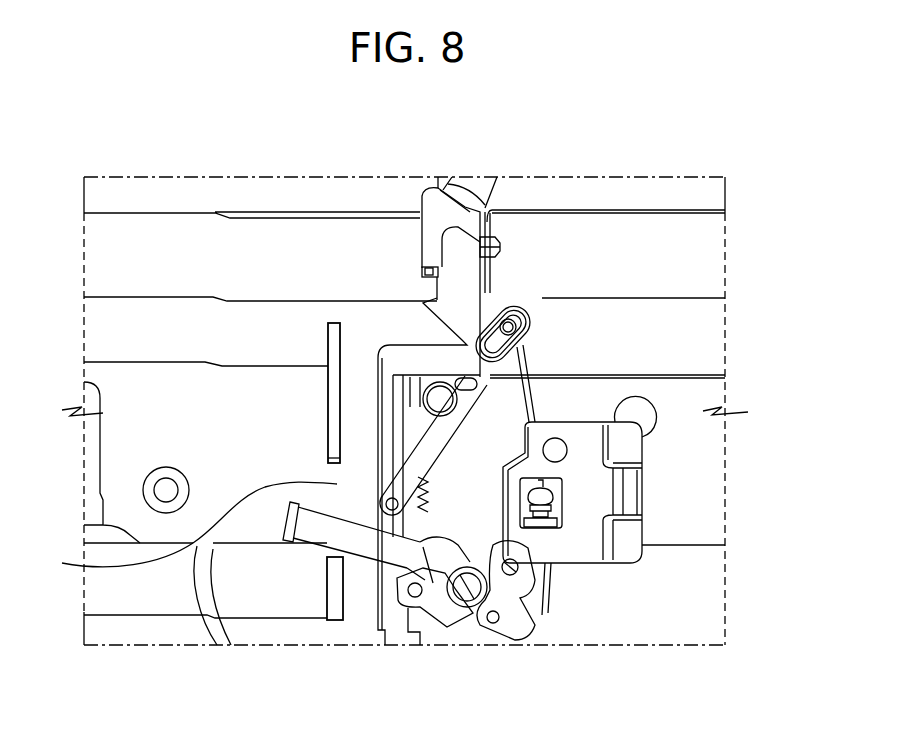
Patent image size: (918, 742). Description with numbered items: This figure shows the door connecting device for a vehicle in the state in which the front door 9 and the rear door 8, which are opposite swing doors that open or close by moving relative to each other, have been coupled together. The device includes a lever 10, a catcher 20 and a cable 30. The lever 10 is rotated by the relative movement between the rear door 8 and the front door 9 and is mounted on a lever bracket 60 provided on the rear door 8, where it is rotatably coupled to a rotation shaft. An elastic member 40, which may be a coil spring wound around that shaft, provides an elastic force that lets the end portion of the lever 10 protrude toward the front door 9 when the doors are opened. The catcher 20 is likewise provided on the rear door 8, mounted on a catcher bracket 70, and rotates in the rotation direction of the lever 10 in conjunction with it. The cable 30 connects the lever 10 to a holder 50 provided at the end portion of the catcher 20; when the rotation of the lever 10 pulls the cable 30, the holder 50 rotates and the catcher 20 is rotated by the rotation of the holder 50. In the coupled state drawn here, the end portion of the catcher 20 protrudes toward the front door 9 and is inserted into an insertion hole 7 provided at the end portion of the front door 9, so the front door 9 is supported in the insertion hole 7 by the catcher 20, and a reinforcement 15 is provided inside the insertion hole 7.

The insertion hole 7 is at (72, 565).
The rear door 8 is at (690, 487).
The front door 9 is at (135, 435).
The lever 10 is at (527, 313).
The reinforcement 15 is at (328, 340).
The catcher 20 is at (362, 603).
The cable 30 is at (522, 362).
The elastic member 40 is at (560, 422).
The holder 50 is at (430, 597).
The lever bracket 60 is at (585, 548).
The catcher bracket 70 is at (490, 590).